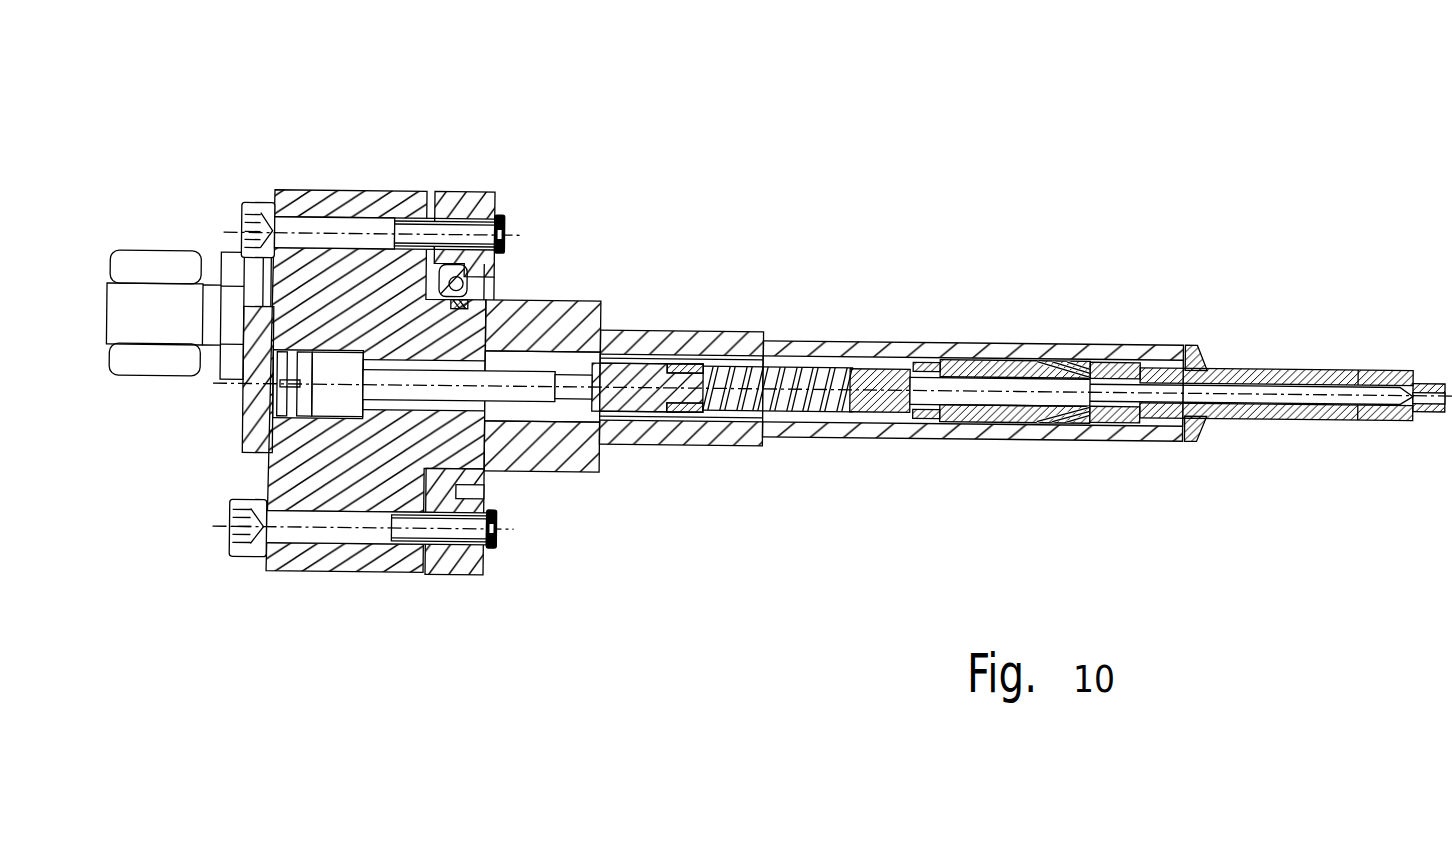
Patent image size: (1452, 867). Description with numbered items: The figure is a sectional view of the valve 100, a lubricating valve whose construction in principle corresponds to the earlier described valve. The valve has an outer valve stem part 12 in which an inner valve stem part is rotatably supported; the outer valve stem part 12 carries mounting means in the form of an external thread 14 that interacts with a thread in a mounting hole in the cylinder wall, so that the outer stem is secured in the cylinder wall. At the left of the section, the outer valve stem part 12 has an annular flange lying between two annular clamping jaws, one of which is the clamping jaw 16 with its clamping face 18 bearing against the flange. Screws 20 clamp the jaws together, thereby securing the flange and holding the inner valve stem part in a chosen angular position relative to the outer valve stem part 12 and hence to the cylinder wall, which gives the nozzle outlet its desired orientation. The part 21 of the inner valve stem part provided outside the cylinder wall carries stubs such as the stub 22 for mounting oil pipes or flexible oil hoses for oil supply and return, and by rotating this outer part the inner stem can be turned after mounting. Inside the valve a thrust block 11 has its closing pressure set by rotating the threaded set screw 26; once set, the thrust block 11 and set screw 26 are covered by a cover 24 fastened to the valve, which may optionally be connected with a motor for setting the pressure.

The thrust block 11 is at (620, 440).
The outer valve stem part 12 is at (568, 316).
The external thread 14 is at (717, 328).
The annular clamping jaw 16 is at (461, 194).
The clamping face 18 is at (494, 277).
The screws 20 is at (243, 204).
The part of the inner valve stem part outside the cylinder wall 21 is at (338, 187).
The stub 22 is at (162, 259).
The cover 24 is at (244, 425).
The set screw 26 is at (402, 388).
The valve 100 is at (715, 490).